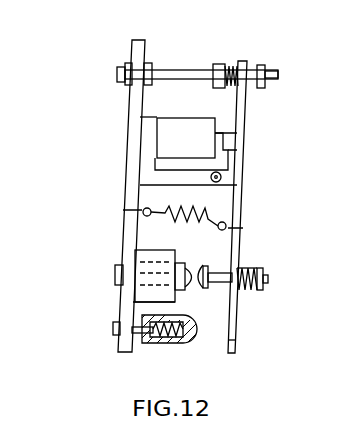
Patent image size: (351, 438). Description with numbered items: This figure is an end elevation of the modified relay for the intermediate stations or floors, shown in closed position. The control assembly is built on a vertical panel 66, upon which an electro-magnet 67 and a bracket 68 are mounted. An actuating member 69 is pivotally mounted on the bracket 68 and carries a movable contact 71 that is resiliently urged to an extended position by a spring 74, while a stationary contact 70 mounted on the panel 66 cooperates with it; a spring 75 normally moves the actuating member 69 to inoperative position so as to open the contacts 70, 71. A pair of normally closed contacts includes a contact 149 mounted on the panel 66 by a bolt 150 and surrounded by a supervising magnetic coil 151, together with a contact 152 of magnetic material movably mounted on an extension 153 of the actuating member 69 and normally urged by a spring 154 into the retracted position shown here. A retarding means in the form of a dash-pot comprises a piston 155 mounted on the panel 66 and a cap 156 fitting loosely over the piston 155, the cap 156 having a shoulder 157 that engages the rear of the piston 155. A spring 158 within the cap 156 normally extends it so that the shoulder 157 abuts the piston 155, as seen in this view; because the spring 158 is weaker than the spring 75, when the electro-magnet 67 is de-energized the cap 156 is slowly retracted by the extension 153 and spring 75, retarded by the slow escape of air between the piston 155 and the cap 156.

The vertical panel 66 is at (130, 198).
The electro-magnet 67 is at (158, 133).
The bracket 68 is at (150, 170).
The actuating member 69 is at (244, 142).
The stationary contact 70 is at (198, 68).
The contact 71 is at (255, 63).
The spring 74 is at (232, 64).
The spring 75 is at (198, 198).
The contact 149 is at (183, 262).
The bolt 150 is at (115, 270).
The magnetic coil 151 is at (137, 290).
The contact 152 is at (210, 263).
The extension 153 is at (235, 342).
The spring 154 is at (250, 293).
The piston 155 is at (140, 348).
The cap 156 is at (175, 345).
The shoulder 157 is at (115, 338).
The spring 158 is at (178, 315).